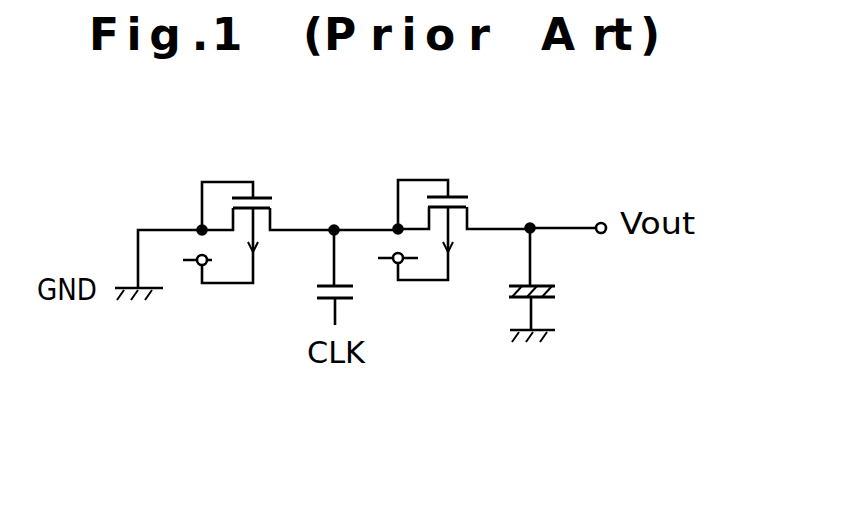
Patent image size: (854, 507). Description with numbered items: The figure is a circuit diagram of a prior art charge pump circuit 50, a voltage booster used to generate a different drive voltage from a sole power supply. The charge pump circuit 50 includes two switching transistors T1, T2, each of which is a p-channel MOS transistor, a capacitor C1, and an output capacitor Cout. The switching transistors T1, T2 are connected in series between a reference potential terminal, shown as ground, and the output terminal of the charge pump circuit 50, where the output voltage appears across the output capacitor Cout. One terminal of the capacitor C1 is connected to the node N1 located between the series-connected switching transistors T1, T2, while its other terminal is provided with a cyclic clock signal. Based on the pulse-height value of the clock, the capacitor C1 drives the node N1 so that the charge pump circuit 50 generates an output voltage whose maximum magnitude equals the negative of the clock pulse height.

The charge pump circuit 50 is at (593, 162).
The switching transistor T1 is at (260, 195).
The switching transistor T2 is at (453, 195).
The node N1 is at (334, 225).
The capacitor C1 is at (367, 277).
The output capacitor Cout is at (579, 285).